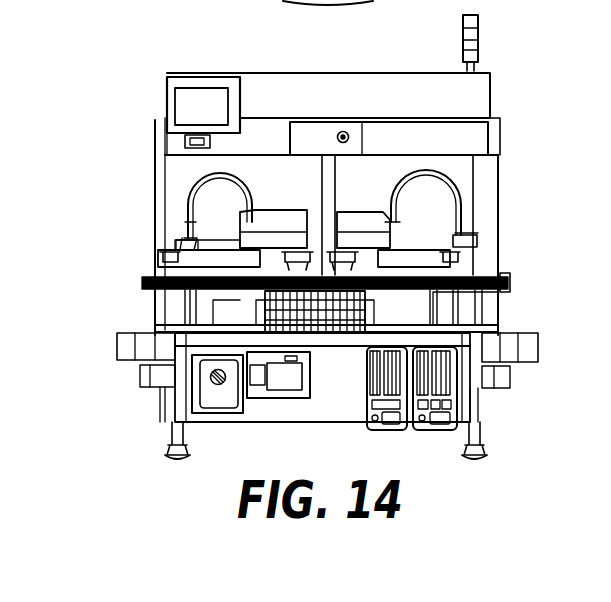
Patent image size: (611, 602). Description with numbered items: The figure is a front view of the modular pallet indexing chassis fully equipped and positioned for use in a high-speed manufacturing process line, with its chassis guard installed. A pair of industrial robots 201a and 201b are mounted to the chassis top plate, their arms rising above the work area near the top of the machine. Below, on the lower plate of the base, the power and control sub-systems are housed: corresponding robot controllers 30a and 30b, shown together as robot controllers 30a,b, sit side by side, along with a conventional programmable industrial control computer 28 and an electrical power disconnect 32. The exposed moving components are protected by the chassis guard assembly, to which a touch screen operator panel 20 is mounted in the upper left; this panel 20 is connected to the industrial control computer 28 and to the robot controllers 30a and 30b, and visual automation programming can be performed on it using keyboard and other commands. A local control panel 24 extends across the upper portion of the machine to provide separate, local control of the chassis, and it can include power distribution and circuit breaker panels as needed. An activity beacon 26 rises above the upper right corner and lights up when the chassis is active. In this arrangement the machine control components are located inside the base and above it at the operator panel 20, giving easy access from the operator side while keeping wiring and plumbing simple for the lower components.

The touch screen operator panel 20 is at (212, 98).
The local control panel 24 is at (318, 127).
The activity beacon 26 is at (478, 40).
The industrial robot 201a is at (180, 220).
The industrial robot 201b is at (463, 195).
The electrical power disconnect 32 is at (218, 403).
The industrial control computer 28 is at (265, 405).
The robot controllers 30a,b is at (430, 424).
The robot controller 30a is at (380, 428).
The robot controller 30b is at (440, 480).